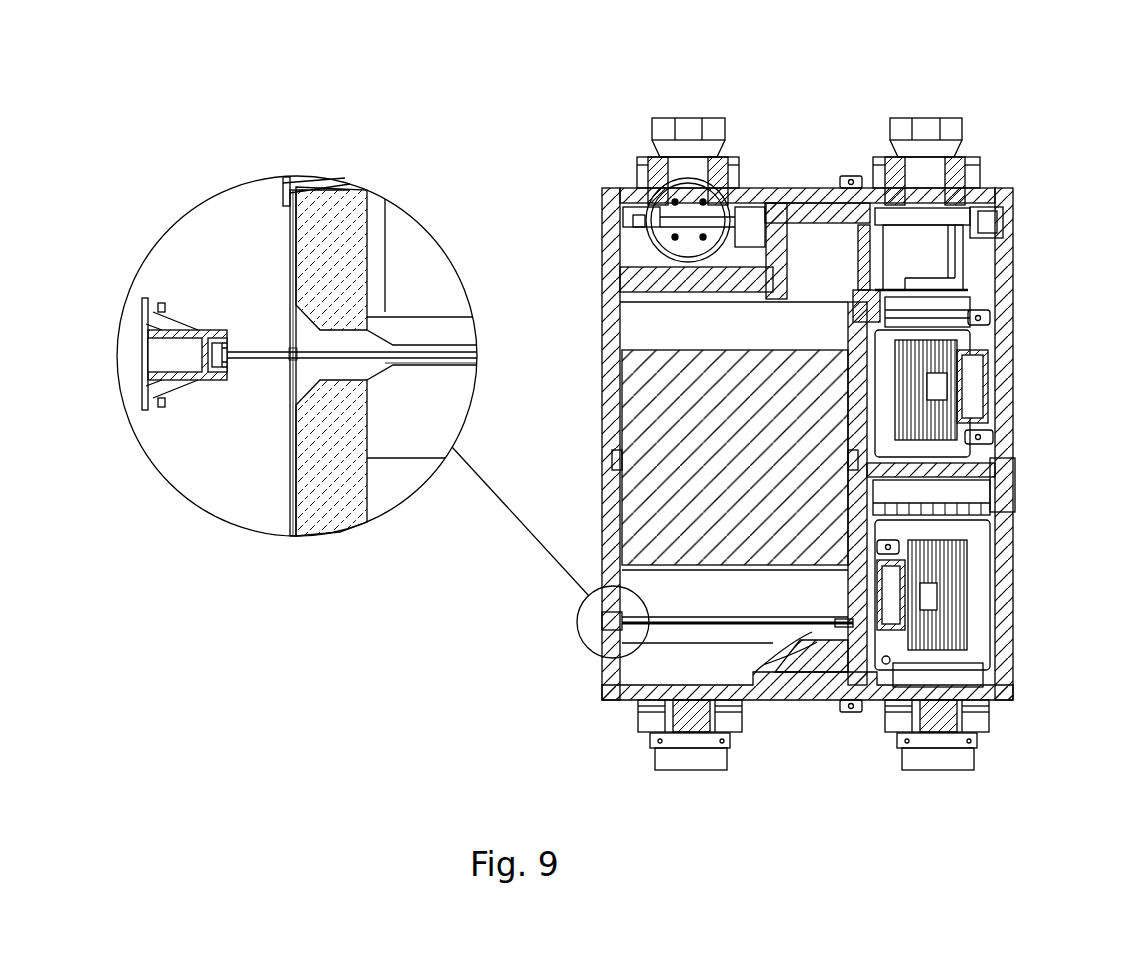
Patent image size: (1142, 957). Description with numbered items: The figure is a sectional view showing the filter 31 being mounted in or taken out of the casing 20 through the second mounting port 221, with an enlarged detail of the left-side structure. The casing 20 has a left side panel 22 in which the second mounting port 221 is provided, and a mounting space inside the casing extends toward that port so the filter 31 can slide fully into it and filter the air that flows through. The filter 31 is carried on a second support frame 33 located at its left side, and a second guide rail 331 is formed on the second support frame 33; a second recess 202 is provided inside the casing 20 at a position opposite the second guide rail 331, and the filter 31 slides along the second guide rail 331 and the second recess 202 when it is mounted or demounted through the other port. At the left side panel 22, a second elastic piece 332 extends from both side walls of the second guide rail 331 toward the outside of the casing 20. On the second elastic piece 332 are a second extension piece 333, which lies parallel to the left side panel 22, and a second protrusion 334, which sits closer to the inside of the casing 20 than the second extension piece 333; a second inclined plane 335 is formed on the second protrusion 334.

The casing 20 is at (1013, 307).
The second recess 202 is at (855, 628).
The left side panel 22 is at (287, 242).
The second mounting port 221 is at (287, 350).
The filter 31 is at (247, 358).
The second support frame 33 is at (146, 342).
The second guide rail 331 is at (216, 376).
The second elastic piece 332 is at (193, 330).
The second extension piece 333 is at (140, 303).
The second protrusion 334 is at (153, 308).
The second inclined plane 335 is at (166, 310).